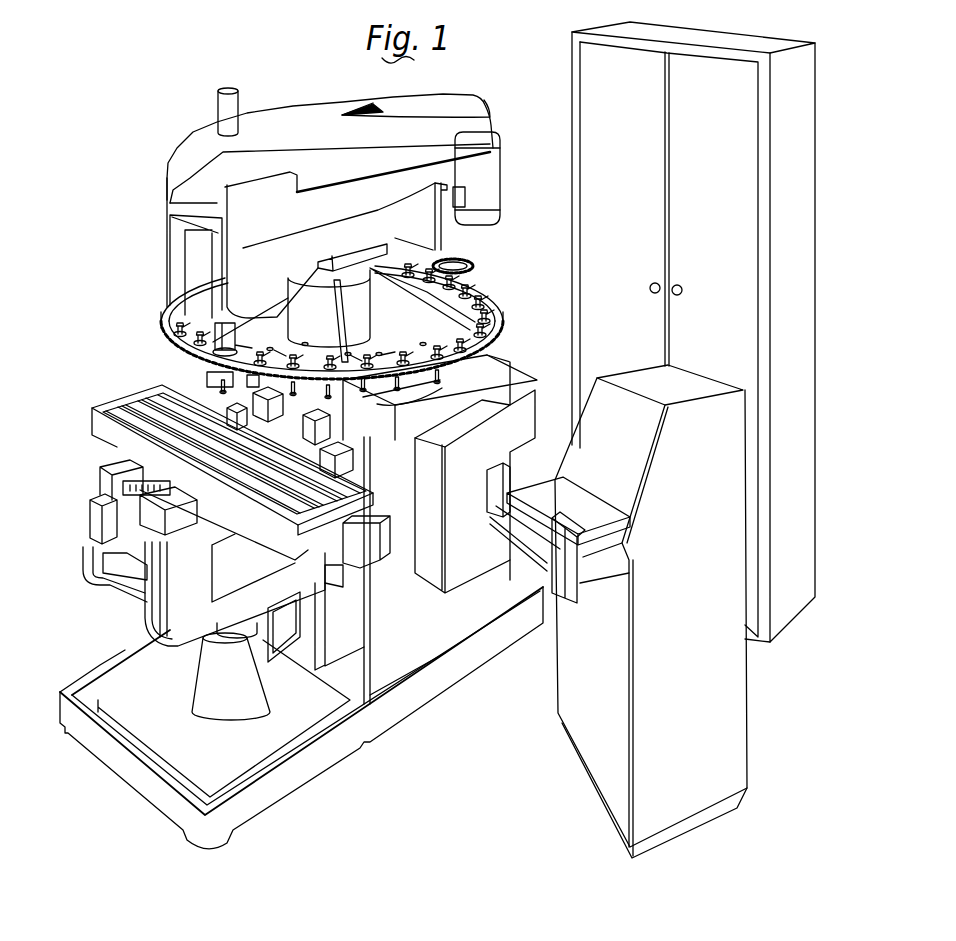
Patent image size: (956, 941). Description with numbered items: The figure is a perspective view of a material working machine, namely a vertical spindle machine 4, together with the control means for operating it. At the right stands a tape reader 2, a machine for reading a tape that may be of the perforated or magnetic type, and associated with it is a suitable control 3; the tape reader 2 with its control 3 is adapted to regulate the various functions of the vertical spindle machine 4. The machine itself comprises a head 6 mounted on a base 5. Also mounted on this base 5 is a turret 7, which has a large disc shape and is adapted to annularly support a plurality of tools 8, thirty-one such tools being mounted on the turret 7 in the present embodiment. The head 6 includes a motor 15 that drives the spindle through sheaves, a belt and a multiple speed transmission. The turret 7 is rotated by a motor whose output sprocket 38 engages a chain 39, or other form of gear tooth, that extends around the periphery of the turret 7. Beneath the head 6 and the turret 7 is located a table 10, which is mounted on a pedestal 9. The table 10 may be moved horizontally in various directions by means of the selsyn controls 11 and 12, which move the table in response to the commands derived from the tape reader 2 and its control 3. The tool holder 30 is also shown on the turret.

The tape reader 2 is at (737, 716).
The control 3 is at (794, 612).
The vertical spindle machine 4 is at (292, 108).
The base 5 is at (406, 707).
The head 6 is at (497, 120).
The turret 7 is at (480, 280).
The tools 8 is at (363, 403).
The pedestal 9 is at (271, 677).
The table 10 is at (277, 530).
The selsyn control 11 is at (375, 557).
The selsyn control 12 is at (87, 527).
The motor 15 is at (493, 172).
The tool holder 30 is at (231, 330).
The output sprocket 38 is at (472, 262).
The chain 39 is at (170, 337).